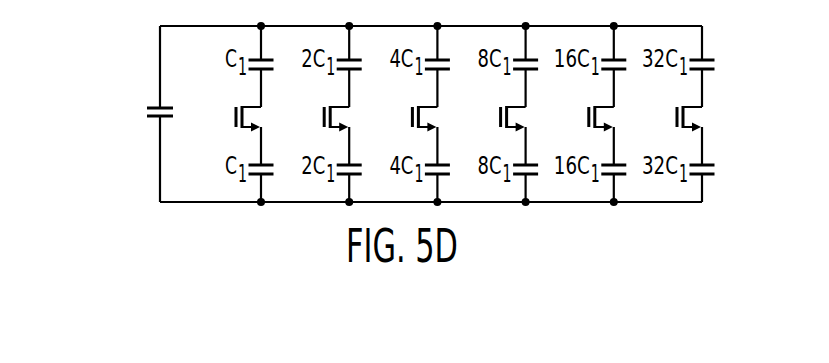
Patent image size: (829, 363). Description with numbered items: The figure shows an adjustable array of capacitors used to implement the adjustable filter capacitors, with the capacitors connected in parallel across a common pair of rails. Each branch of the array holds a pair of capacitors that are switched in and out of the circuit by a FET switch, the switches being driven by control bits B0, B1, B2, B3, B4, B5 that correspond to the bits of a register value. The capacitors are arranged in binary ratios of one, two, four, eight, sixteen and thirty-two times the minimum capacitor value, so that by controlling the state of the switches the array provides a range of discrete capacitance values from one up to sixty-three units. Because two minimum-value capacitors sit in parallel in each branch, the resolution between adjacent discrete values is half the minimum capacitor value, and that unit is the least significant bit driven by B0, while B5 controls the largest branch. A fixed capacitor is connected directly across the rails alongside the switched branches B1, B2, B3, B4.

The switch transistor B0 is at (234, 117).
The switch transistor B1 is at (322, 117).
The switch transistor B2 is at (410, 117).
The switch transistor B3 is at (499, 117).
The switch transistor B4 is at (587, 117).
The switch transistor B5 is at (675, 117).